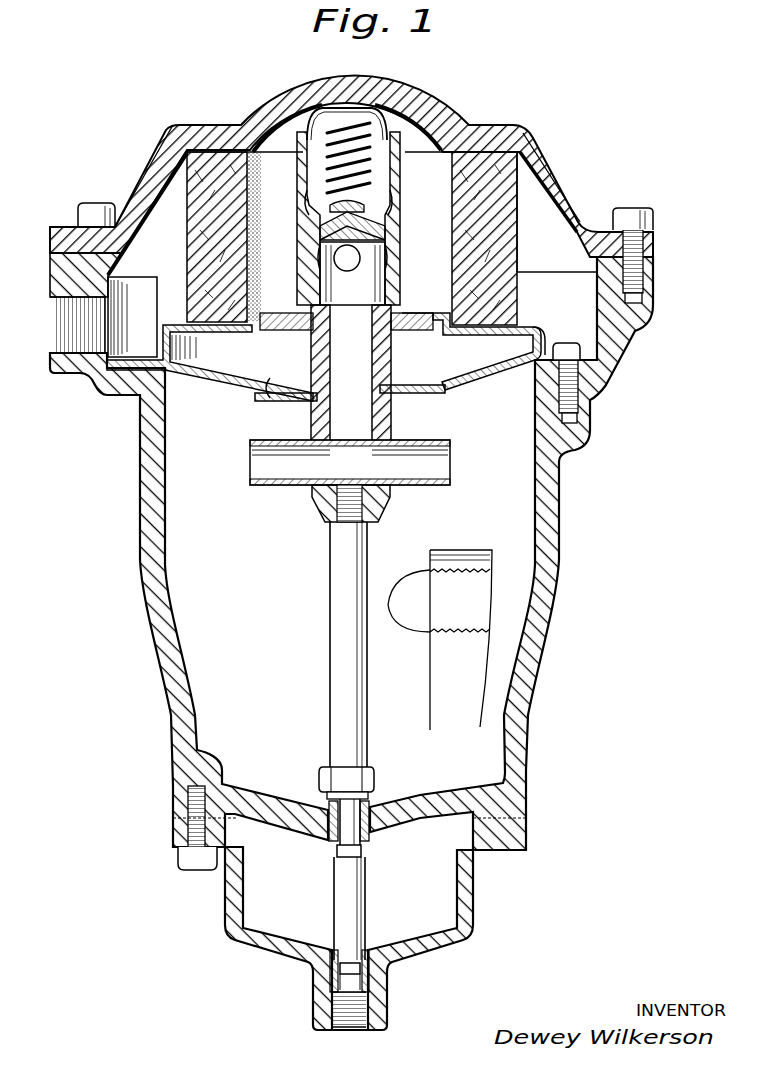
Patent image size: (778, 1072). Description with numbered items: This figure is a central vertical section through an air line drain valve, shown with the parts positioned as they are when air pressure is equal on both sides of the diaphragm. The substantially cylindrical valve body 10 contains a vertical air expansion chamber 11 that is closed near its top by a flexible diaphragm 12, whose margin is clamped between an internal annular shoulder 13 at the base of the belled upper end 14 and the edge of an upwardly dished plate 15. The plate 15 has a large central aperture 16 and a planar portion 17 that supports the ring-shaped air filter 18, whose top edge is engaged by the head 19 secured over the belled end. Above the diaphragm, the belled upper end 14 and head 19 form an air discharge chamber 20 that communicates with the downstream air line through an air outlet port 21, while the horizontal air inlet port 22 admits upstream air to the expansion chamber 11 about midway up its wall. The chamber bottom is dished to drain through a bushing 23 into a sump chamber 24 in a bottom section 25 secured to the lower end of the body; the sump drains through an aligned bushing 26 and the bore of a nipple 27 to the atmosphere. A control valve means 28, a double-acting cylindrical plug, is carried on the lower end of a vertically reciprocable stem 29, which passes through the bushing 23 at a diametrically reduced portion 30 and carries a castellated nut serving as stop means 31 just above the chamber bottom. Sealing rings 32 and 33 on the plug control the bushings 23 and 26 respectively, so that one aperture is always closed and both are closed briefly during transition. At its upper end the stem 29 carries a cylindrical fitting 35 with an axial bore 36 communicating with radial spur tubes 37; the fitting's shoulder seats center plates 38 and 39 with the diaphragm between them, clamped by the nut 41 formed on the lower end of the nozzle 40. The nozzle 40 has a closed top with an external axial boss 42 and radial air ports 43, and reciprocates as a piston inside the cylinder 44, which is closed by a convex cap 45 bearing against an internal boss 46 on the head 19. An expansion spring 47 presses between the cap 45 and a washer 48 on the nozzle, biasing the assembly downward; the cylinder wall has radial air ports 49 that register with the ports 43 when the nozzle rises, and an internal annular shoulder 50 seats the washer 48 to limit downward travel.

The valve body 10 is at (157, 645).
The air expansion chamber 11 is at (190, 567).
The flexible diaphragm 12 is at (236, 385).
The internal annular shoulder 13 is at (555, 380).
The belled upper end 14 is at (624, 326).
The upwardly dished plate 15 is at (536, 331).
The central aperture 16 is at (419, 310).
The planar portion 17 is at (506, 334).
The air filter 18 is at (196, 234).
The head 19 is at (150, 180).
The air discharge chamber 20 is at (538, 218).
The air outlet port 21 is at (54, 335).
The air inlet port 22 is at (470, 601).
The bushing 23 is at (329, 824).
The sump chamber 24 is at (447, 903).
The bottom section 25 is at (228, 936).
The bushing 26 is at (369, 987).
The nipple 27 is at (318, 1024).
The control valve means 28 is at (365, 902).
The stem 29 is at (330, 668).
The diametrically reduced portion 30 is at (362, 810).
The stop means 31 is at (322, 776).
The packing and sealing ring 32 is at (362, 854).
The sealing ring 33 is at (340, 962).
The cylindrical fitting 35 is at (312, 512).
The axial bore 36 is at (366, 434).
The spur tubes 37 is at (253, 448).
The center plate 38 is at (258, 397).
The center plate 39 is at (272, 384).
The nozzle 40 is at (318, 326).
The nut 41 is at (392, 354).
The external axial boss 42 is at (366, 208).
The radial air ports 43 is at (348, 262).
The cylinder 44 is at (402, 246).
The convex cap 45 is at (404, 106).
The internal boss 46 is at (310, 104).
The expansion spring 47 is at (330, 168).
The washer 48 is at (392, 223).
The radial air ports 49 is at (303, 206).
The internal annular shoulder 50 is at (322, 233).